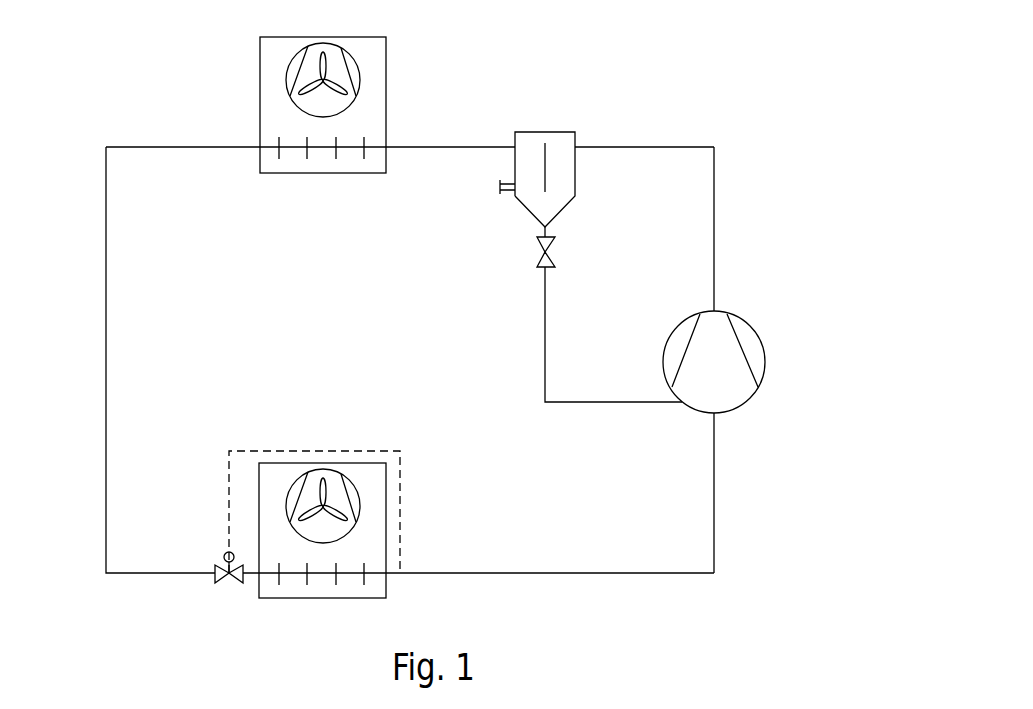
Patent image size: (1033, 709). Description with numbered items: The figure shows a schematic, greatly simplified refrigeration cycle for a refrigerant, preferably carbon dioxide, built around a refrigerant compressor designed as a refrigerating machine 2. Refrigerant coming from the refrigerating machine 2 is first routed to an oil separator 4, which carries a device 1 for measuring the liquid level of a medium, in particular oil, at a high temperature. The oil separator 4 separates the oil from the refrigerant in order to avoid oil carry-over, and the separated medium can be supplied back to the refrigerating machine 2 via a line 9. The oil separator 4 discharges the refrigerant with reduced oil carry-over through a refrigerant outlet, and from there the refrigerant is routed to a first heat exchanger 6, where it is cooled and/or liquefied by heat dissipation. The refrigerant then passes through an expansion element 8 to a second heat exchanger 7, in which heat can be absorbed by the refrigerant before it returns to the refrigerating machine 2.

The device for measuring a liquid level 1 is at (480, 180).
The refrigerating machine 2 is at (716, 358).
The oil separator 4 is at (553, 150).
The first heat exchanger 6 is at (275, 75).
The second heat exchanger 7 is at (276, 492).
The expansion element 8 is at (226, 552).
The line 9 is at (542, 312).